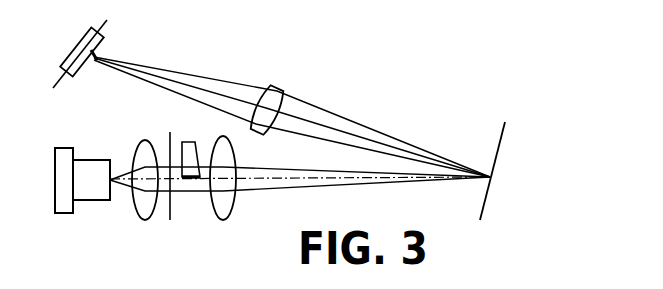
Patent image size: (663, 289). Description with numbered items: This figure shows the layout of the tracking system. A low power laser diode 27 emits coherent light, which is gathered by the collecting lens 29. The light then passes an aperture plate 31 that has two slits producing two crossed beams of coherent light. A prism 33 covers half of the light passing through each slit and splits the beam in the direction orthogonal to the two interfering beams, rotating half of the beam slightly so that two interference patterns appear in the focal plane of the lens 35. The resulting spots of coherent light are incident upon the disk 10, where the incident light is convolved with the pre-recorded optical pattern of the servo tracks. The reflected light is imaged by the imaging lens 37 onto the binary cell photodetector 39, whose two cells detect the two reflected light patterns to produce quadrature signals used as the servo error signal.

The disk 10 is at (506, 132).
The laser diode 27 is at (62, 147).
The collecting lens 29 is at (140, 145).
The aperture plate 31 is at (170, 205).
The prism 33 is at (183, 141).
The lens 35 is at (237, 205).
The imaging lens 37 is at (278, 83).
The binary cell photodetector 39 is at (86, 36).